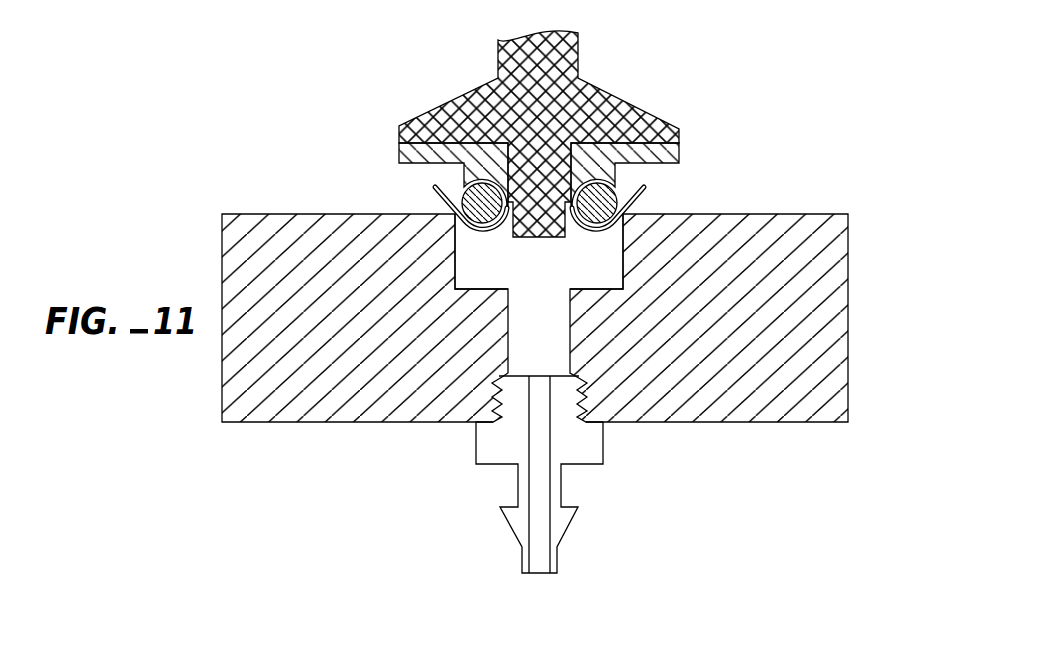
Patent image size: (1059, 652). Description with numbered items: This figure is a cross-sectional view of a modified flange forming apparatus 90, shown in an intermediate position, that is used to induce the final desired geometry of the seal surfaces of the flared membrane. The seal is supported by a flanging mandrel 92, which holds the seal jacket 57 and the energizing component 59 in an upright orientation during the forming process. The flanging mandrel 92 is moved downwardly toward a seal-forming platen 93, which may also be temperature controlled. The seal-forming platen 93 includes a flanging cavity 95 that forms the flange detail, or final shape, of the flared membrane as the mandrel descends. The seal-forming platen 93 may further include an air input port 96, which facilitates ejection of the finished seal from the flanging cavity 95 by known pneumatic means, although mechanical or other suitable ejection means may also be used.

The flange forming apparatus 90 is at (736, 69).
The flanging mandrel 92 is at (452, 101).
The seal jacket 57 is at (680, 161).
The energizing component 59 is at (646, 187).
The seal-forming platen 93 is at (715, 408).
The flanging cavity 95 is at (457, 275).
The air input port 96 is at (605, 442).